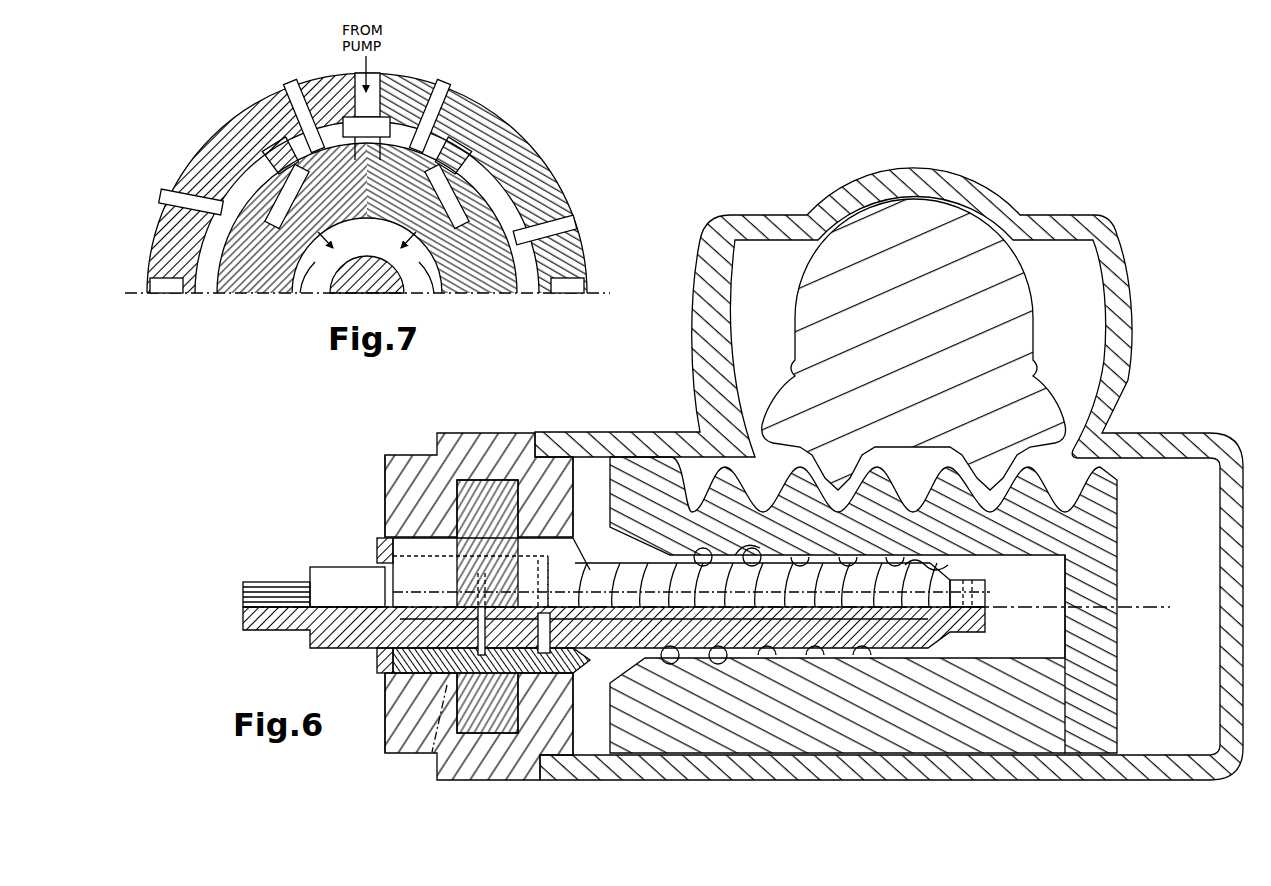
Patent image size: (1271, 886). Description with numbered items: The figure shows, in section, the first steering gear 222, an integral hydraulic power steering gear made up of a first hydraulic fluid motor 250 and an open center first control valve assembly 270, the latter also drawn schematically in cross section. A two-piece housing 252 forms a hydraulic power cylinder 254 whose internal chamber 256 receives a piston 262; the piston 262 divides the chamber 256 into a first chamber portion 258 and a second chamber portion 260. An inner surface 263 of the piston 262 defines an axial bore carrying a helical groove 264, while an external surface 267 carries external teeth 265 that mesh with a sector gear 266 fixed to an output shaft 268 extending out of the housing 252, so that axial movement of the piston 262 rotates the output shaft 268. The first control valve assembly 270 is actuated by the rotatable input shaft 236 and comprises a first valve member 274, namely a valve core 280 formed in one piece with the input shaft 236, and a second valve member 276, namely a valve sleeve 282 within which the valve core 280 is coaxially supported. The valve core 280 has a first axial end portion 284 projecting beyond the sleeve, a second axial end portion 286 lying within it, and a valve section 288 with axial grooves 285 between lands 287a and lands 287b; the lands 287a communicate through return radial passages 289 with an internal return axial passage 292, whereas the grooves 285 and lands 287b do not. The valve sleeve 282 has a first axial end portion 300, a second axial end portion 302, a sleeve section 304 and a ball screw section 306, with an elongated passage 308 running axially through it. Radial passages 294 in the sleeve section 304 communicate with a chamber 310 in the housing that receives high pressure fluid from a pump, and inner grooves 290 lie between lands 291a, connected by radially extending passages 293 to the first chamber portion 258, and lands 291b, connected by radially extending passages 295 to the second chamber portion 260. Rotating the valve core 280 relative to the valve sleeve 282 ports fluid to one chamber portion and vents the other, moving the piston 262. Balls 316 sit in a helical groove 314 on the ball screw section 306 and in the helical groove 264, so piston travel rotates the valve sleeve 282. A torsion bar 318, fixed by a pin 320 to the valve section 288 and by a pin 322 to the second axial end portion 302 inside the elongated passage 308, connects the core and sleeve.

In FIG. 6, the first steering gear 222 is at (889, 490).
In FIG. 6, the input shaft 236 is at (252, 578).
In FIG. 6, the first hydraulic fluid motor 250 is at (889, 490).
In FIG. 6, the two-piece housing 252 is at (479, 623).
In FIG. 6, the hydraulic power cylinder 254 is at (548, 780).
In FIG. 6, the internal chamber 256 is at (889, 474).
In FIG. 6, the first chamber portion 258 is at (582, 798).
In FIG. 6, the second chamber portion 260 is at (1158, 693).
In FIG. 6, the piston 262 is at (863, 606).
In FIG. 6, the inner surface 263 is at (1008, 656).
In FIG. 6, the helical groove 264 is at (649, 688).
In FIG. 6, the external teeth 265 is at (863, 576).
In FIG. 6, the sector gear 266 is at (1070, 388).
In FIG. 6, the external surface 267 is at (628, 440).
In FIG. 6, the output shaft 268 is at (976, 334).
In FIG. 7, the first control valve assembly 270 is at (596, 113).
In FIG. 6, the first control valve assembly 270 is at (471, 570).
In FIG. 7, the first valve member 274 is at (347, 238).
In FIG. 6, the first valve member 274 is at (323, 533).
In FIG. 7, the valve core 280 is at (250, 282).
In FIG. 6, the valve core 280 is at (318, 562).
In FIG. 7, the second valve member 276 is at (333, 183).
In FIG. 6, the second valve member 276 is at (340, 625).
In FIG. 7, the valve sleeve 282 is at (162, 224).
In FIG. 6, the valve sleeve 282 is at (400, 685).
In FIG. 6, the first axial end portion 284 is at (649, 618).
In FIG. 7, the grooves 285 is at (245, 150).
In FIG. 6, the second axial end portion 286 is at (501, 684).
In FIG. 7, the lands 287a is at (230, 170).
In FIG. 7, the lands 287b is at (364, 150).
In FIG. 6, the valve section 288 is at (538, 672).
In FIG. 7, the return radial passages 289 is at (310, 270).
In FIG. 7, the grooves 290 is at (262, 112).
In FIG. 7, the lands 291a is at (322, 105).
In FIG. 7, the lands 291b is at (418, 100).
In FIG. 7, the internal return axial passage 292 is at (410, 283).
In FIG. 7, the radially extending passages 293 is at (290, 95).
In FIG. 7, the radial passages 294 is at (378, 78).
In FIG. 7, the radially extending passages 295 is at (448, 100).
In FIG. 6, the first axial end portion 300 is at (408, 550).
In FIG. 6, the second axial end portion 302 is at (986, 592).
In FIG. 6, the sleeve section 304 is at (443, 547).
In FIG. 6, the ball screw section 306 is at (950, 568).
In FIG. 6, the elongated passage 308 is at (800, 640).
In FIG. 6, the chamber 310 is at (432, 752).
In FIG. 6, the helical groove 314 is at (767, 666).
In FIG. 6, the balls 316 is at (747, 560).
In FIG. 6, the torsion bar 318 is at (986, 620).
In FIG. 6, the pin 320 is at (478, 628).
In FIG. 6, the pin 322 is at (967, 624).